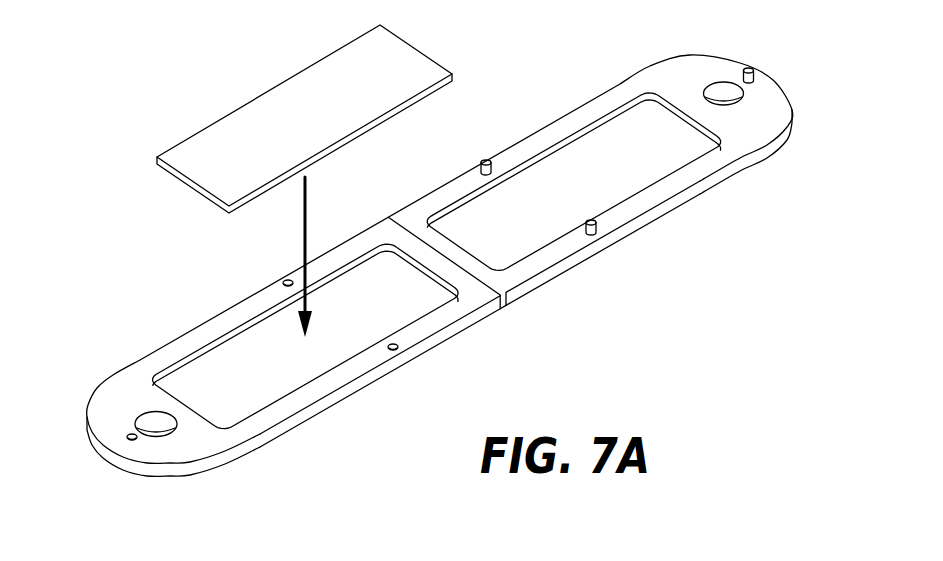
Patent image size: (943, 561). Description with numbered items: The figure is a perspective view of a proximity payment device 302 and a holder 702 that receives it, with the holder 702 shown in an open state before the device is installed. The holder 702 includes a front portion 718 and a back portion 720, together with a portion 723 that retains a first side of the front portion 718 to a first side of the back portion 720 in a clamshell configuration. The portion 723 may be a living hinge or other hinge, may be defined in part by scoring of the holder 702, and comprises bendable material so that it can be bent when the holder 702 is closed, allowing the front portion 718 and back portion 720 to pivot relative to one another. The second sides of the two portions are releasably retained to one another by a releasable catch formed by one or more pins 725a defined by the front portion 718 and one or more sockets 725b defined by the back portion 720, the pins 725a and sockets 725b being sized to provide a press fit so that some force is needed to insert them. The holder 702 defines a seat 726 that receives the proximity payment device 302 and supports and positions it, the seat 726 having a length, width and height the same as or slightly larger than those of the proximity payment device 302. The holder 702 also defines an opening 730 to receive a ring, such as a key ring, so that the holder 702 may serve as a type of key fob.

The proximity payment device 302 is at (250, 122).
The holder 702 is at (146, 343).
The front portion 718 is at (652, 224).
The back portion 720 is at (305, 426).
The portion 723 is at (391, 218).
The pins 725a is at (749, 66).
The sockets 725b is at (288, 280).
The seat 726 is at (216, 375).
The opening 730 is at (153, 417).